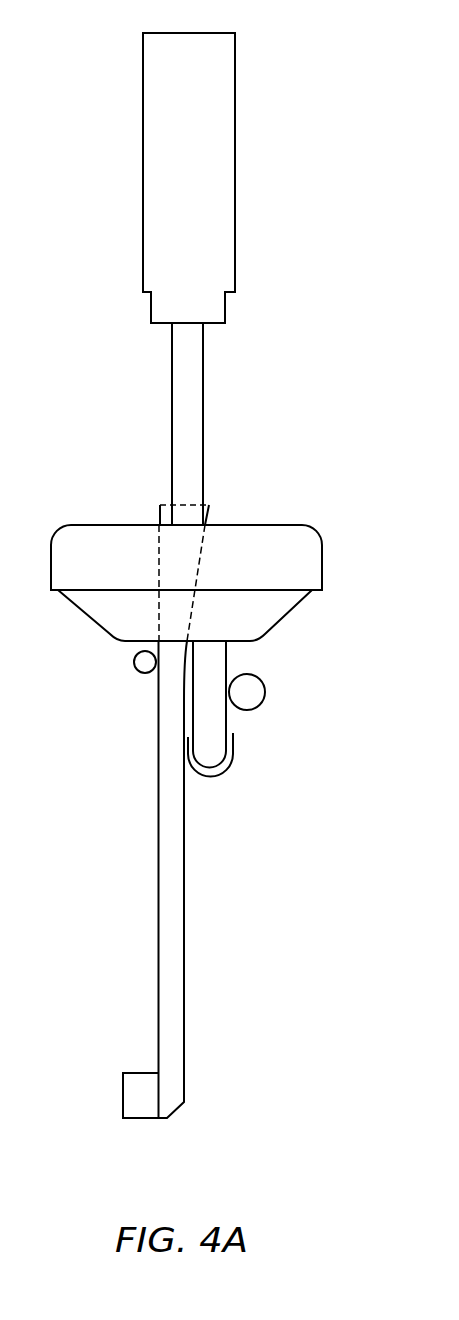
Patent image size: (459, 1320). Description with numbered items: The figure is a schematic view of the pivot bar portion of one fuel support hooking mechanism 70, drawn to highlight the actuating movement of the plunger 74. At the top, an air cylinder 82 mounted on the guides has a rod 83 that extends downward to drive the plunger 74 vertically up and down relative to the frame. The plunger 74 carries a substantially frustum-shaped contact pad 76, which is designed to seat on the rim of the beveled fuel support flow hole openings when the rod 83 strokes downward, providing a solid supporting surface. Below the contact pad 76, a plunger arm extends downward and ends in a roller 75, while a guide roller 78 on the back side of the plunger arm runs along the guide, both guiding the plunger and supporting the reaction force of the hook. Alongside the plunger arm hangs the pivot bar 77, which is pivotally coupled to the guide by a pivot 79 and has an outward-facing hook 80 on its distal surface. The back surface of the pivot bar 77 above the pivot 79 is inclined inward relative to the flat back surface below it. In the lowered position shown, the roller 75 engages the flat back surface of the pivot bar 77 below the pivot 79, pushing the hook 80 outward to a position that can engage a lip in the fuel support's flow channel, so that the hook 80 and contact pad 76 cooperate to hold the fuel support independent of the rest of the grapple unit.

The fuel support hooking mechanism 70 is at (98, 165).
The air cylinder 82 is at (231, 229).
The rod 83 is at (192, 411).
The plunger 74 is at (305, 571).
The contact pad 76 is at (277, 612).
The pivot bar 77 is at (167, 862).
The hook 80 is at (128, 1100).
The roller 75 is at (227, 772).
The pivot 79 is at (138, 673).
The guide roller 78 is at (265, 693).